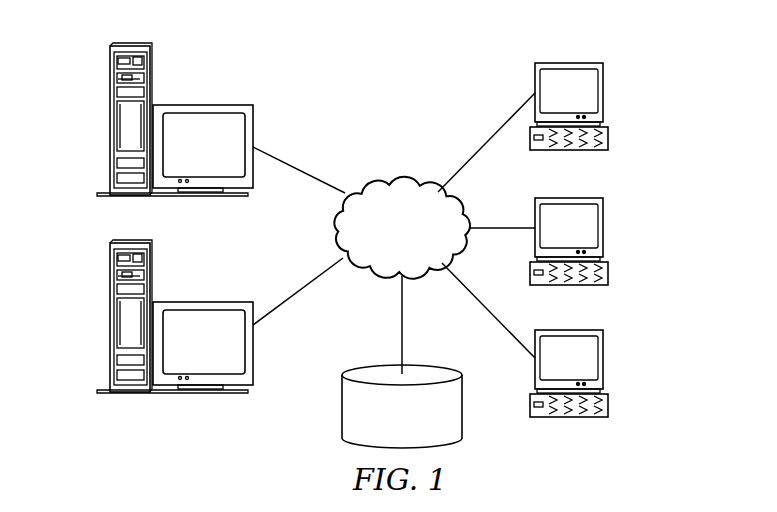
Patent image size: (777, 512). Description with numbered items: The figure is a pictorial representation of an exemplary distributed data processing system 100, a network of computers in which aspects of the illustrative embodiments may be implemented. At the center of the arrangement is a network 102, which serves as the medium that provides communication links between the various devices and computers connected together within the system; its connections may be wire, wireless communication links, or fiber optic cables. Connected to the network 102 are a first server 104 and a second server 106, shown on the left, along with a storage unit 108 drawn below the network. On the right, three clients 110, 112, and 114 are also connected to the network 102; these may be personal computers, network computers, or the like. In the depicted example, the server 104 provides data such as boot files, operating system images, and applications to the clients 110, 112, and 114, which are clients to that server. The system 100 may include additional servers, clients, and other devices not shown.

The distributed data processing system 100 is at (452, 52).
The network 102 is at (374, 181).
The server 104 is at (110, 118).
The server 106 is at (111, 318).
The storage unit 108 is at (342, 404).
The client 110 is at (603, 92).
The client 112 is at (603, 228).
The client 114 is at (603, 359).